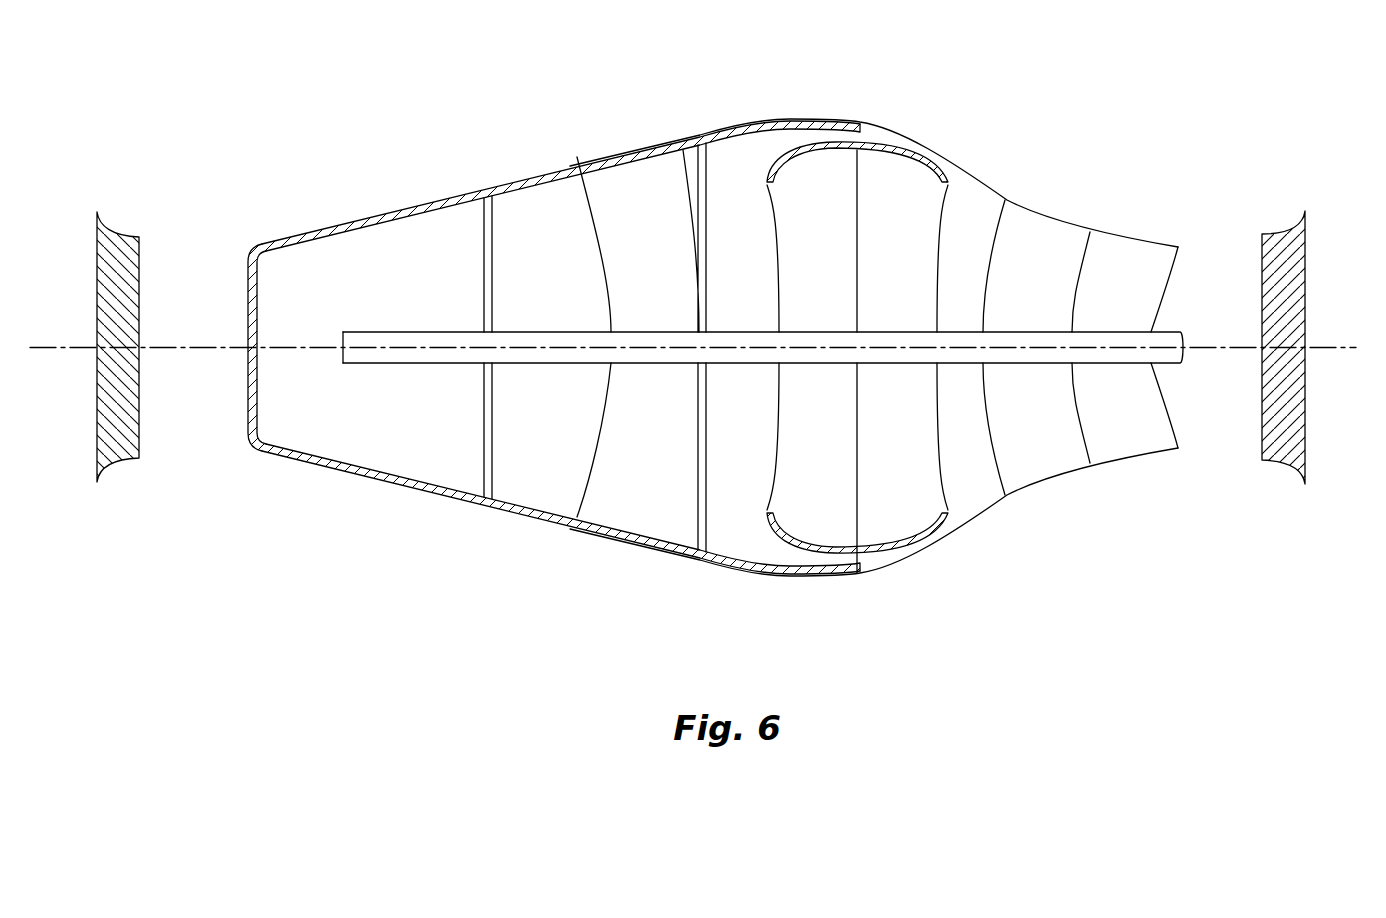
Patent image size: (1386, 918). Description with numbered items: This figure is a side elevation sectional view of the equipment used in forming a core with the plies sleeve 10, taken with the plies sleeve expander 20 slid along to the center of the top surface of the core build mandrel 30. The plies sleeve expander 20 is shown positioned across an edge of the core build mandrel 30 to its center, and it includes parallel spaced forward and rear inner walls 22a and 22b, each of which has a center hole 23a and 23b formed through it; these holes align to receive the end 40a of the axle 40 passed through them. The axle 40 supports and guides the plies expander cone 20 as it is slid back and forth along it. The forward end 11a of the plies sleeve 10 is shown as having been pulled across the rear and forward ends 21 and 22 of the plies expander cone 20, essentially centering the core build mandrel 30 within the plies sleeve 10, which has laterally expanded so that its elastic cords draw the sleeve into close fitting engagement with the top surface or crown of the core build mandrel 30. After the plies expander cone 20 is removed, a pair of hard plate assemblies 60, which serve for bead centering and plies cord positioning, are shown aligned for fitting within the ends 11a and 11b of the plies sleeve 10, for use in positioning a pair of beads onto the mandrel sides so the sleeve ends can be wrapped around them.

The plies sleeve 10 is at (1079, 178).
The forward end of plies sleeve 11a is at (1169, 249).
The end of plies sleeve 11b is at (577, 157).
The plies sleeve expander 20 is at (500, 184).
The rear end of plies expander cone 21 is at (253, 273).
The forward end of plies expander cone 22 is at (868, 126).
The forward inner wall 22a is at (692, 193).
The rear inner wall 22b is at (484, 273).
The center hole of forward inner wall 23a is at (705, 363).
The center hole of rear inner wall 23b is at (493, 363).
The core build mandrel 30 is at (903, 505).
The axle 40 is at (1020, 352).
The end of axle 40a is at (343, 352).
The hard plate assembly 60 is at (113, 227).